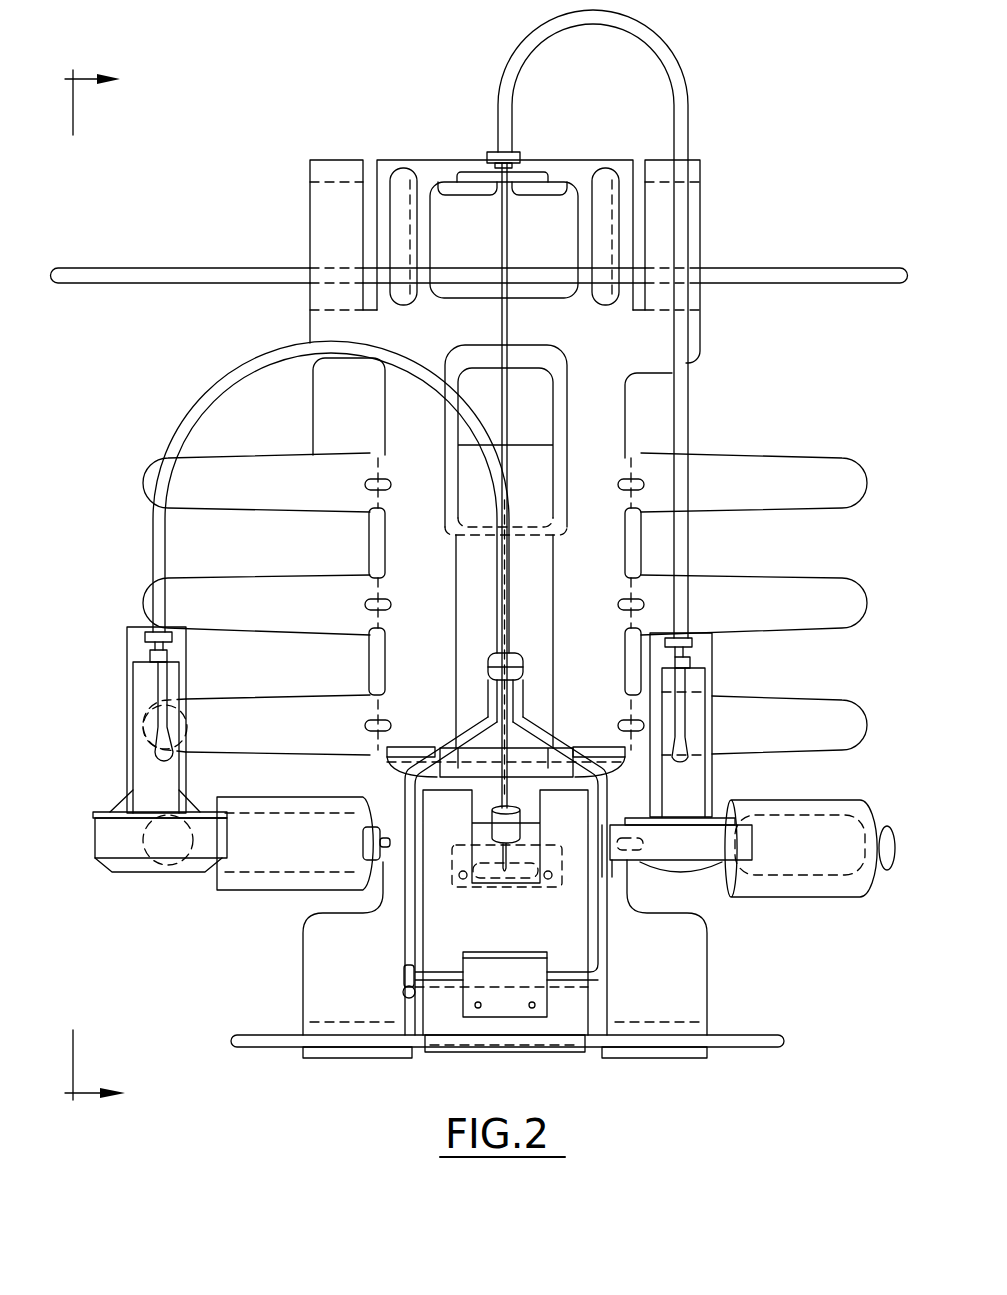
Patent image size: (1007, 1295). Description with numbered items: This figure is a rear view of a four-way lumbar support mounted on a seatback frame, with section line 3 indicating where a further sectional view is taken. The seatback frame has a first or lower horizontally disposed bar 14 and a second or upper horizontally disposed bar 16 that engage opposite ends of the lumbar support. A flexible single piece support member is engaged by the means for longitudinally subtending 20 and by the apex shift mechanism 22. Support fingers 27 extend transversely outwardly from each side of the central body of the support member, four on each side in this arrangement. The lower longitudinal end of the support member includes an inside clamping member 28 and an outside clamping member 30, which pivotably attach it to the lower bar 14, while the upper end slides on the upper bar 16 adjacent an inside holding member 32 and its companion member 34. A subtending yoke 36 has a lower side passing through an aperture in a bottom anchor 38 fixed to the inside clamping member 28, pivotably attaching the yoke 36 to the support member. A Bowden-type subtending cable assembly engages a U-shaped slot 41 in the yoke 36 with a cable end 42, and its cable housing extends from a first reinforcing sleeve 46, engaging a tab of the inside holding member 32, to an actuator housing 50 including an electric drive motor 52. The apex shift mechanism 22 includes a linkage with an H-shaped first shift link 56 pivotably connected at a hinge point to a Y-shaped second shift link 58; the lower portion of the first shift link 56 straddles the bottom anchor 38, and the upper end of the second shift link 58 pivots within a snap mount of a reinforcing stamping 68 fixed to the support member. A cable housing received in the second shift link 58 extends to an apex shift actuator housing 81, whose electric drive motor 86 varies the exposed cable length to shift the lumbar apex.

The section line 3- 3 is at (95, 589).
The first horizontally disposed bar 14 is at (735, 1035).
The second horizontally disposed bar 16 is at (766, 274).
The means for longitudinally subtending 20 is at (704, 880).
The apex shift mechanism 22 is at (110, 774).
The support fingers 27 is at (770, 452).
The inside clamping member 28 is at (520, 1055).
The outside clamping member 30 is at (365, 1058).
The inside holding member 32 is at (392, 160).
The posts 34 is at (306, 186).
The subtending yoke 36 is at (405, 920).
The bottom anchor 38 is at (503, 1005).
The U-shaped slot 41 is at (532, 658).
The cable end 42 is at (523, 672).
The first reinforcing sleeve 46 is at (520, 156).
The actuator housing 50 is at (710, 808).
The electric drive motor 52 is at (823, 892).
The first shift link 56 is at (532, 940).
The second shift link 58 is at (408, 745).
The reinforcing stamping 68 is at (530, 568).
The apex shift actuator housing 81 is at (165, 875).
The electric drive motor 86 is at (280, 893).